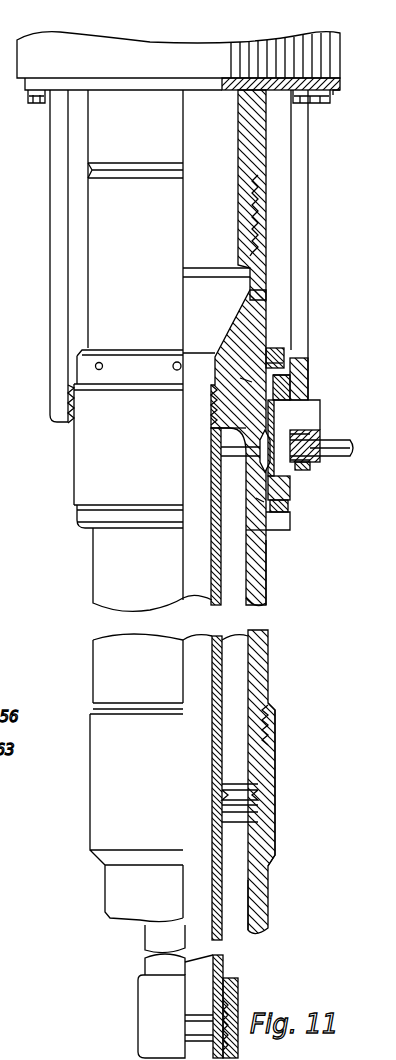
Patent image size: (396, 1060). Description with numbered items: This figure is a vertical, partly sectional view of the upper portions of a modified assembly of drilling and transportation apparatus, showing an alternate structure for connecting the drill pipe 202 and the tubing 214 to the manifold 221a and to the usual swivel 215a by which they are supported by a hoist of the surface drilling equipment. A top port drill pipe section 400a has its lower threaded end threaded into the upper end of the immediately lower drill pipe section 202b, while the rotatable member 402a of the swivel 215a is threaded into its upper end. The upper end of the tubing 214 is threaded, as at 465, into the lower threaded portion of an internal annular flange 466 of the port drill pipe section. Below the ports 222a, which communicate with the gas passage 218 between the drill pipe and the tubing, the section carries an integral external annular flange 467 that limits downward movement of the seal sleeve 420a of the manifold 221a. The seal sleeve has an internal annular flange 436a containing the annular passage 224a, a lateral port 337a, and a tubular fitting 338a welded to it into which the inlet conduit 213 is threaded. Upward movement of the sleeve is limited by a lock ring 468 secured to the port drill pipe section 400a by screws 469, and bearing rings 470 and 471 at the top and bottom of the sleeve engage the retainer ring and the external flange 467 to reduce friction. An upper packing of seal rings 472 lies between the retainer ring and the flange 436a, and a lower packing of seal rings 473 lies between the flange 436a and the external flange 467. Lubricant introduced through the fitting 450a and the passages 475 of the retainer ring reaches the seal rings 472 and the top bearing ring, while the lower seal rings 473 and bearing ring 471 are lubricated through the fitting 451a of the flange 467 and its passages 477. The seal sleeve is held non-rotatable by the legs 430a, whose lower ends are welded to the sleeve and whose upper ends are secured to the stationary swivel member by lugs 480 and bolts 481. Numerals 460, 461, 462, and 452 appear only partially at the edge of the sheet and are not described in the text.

The swivel 215a is at (352, 27).
The lugs 480 is at (333, 90).
The bolts 481 is at (330, 112).
The rotatable member 402a is at (258, 152).
The legs 430a is at (50, 248).
The internal annular flange 466 is at (232, 323).
The screws 469 is at (99, 360).
The bearing ring 471 is at (250, 380).
The lock ring 468 is at (275, 350).
The passages 475 is at (283, 350).
The fitting 450a is at (290, 352).
The bearing ring 470 is at (296, 365).
The manifold 221a is at (321, 386).
The seal rings 472 is at (303, 396).
The lateral port 337a is at (305, 430).
The inlet conduit 213 is at (350, 428).
The threads 465 is at (217, 395).
The internal annular flange 436a is at (228, 420).
The annular passage 224a is at (258, 450).
The ports 222a is at (216, 450).
The seal rings 473 is at (266, 482).
The tubular fitting 338a is at (310, 466).
The seal sleeve 420a is at (285, 486).
The fitting 451a is at (285, 520).
The external annular flange 467 is at (283, 530).
The passages 477 is at (262, 532).
The port drill pipe section 400a is at (266, 575).
The gas passage 218 is at (240, 658).
The drill pipe section 202b is at (265, 838).
The drill pipe 202 is at (282, 892).
The tubing 214 is at (239, 967).
The element 460 is at (10, 490).
The element 461 is at (10, 505).
The element 462 is at (2, 660).
The element 452 is at (16, 600).